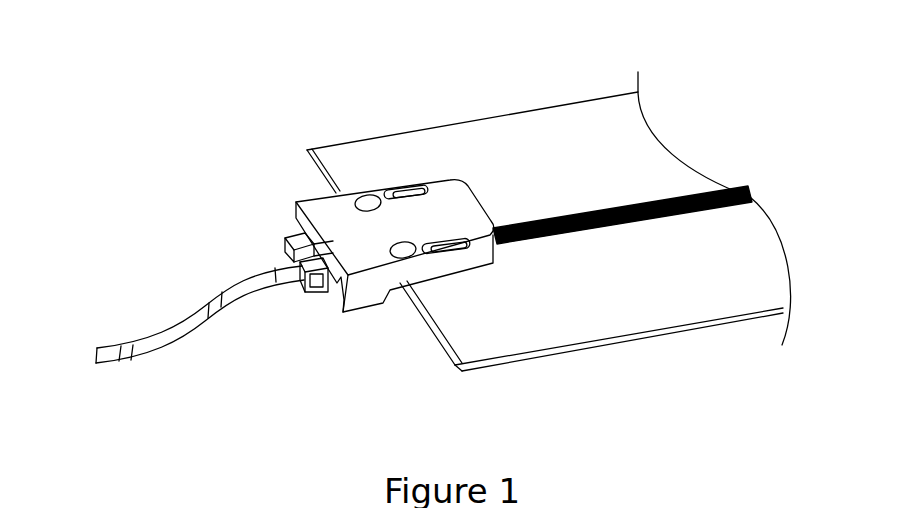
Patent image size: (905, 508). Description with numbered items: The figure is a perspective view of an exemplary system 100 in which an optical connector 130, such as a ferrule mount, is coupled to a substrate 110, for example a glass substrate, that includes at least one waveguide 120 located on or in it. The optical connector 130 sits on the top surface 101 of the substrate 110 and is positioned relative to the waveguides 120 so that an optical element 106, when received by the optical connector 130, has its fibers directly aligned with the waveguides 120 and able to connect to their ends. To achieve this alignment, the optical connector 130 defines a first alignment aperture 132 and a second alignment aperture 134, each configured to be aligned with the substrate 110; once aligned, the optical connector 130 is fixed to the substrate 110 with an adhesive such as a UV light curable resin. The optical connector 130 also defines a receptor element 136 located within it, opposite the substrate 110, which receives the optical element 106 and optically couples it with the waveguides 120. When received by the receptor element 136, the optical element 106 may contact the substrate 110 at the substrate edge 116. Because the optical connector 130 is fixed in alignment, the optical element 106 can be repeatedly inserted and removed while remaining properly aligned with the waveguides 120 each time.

The system 100 is at (174, 90).
The top surface 101 is at (682, 313).
The optical element 106 is at (168, 338).
The substrate 110 is at (577, 122).
The substrate edge 116 is at (455, 368).
The waveguide 120 is at (673, 197).
The optical connector 130 is at (332, 338).
The first alignment aperture 132 is at (405, 252).
The second alignment aperture 134 is at (368, 203).
The receptor element 136 is at (226, 238).